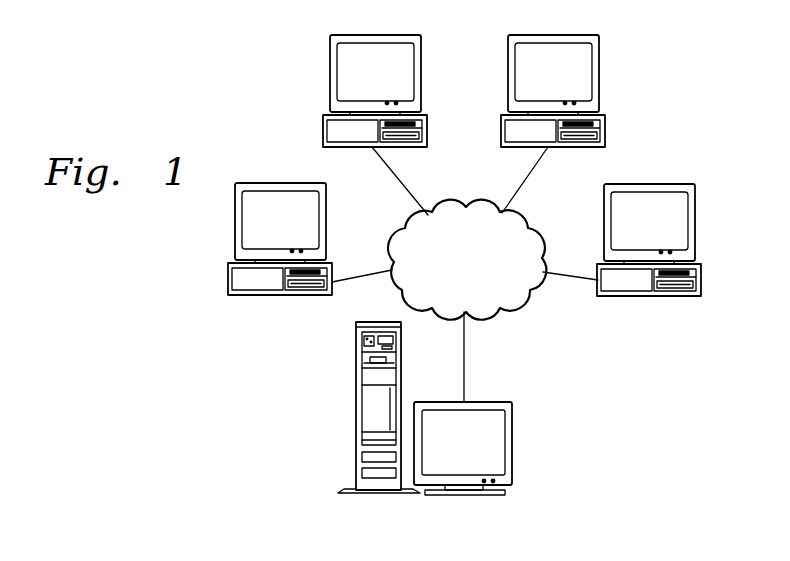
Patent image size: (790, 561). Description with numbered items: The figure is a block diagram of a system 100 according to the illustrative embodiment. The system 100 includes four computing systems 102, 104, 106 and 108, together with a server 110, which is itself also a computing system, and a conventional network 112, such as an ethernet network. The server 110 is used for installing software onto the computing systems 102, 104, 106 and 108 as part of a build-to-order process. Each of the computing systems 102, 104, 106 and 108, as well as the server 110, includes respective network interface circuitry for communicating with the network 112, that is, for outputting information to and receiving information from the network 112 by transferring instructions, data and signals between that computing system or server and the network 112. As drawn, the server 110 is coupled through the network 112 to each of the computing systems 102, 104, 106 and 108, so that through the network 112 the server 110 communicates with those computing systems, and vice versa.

The system 100 is at (228, 124).
The computing system 102 is at (600, 72).
The computing system 104 is at (648, 183).
The computing system 106 is at (421, 72).
The computing system 108 is at (234, 222).
The server 110 is at (357, 411).
The network 112 is at (465, 207).